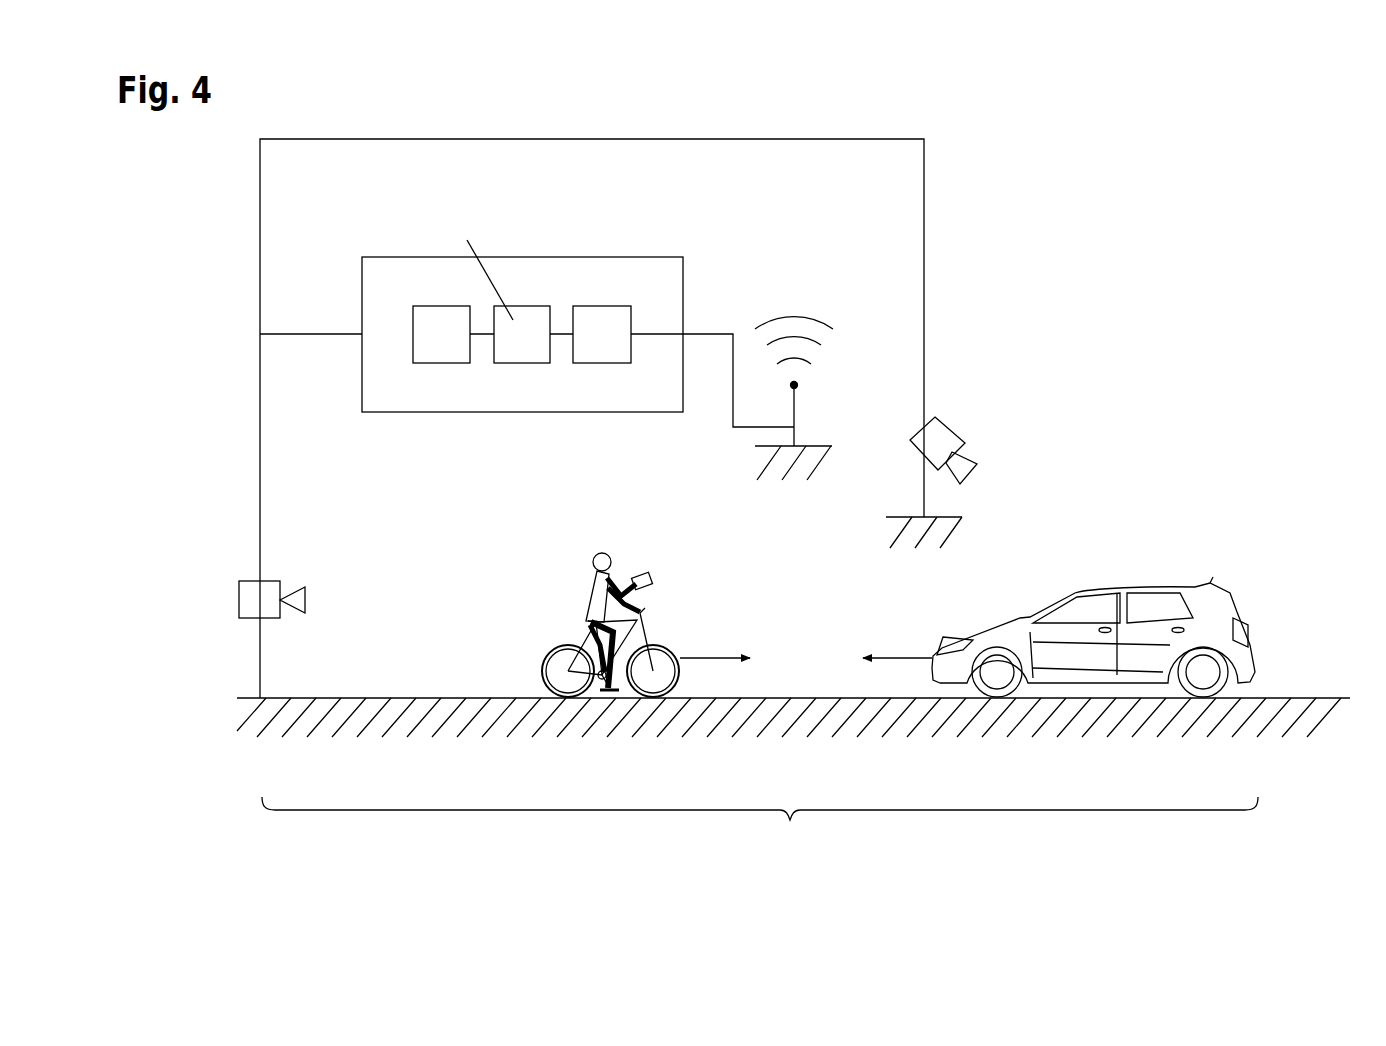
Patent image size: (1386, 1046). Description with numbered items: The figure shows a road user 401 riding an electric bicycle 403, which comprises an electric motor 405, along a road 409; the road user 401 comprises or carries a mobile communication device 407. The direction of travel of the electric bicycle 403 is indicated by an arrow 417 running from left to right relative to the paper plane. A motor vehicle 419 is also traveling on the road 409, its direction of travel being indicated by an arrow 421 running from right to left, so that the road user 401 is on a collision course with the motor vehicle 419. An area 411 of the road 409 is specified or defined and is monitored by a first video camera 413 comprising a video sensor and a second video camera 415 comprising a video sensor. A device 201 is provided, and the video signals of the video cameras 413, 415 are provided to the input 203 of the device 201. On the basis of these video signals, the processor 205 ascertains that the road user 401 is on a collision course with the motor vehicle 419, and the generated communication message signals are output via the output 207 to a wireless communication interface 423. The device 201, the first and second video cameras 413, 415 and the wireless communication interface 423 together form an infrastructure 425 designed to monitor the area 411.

The device 201 is at (522, 257).
The input 203 is at (442, 363).
The processor 205 is at (523, 363).
The output 207 is at (600, 363).
The road user 401 is at (599, 614).
The electric bicycle 403 is at (634, 697).
The electric motor 405 is at (623, 682).
The mobile communication device 407 is at (655, 576).
The road 409 is at (1333, 697).
The area 411 is at (760, 827).
The first video camera 413 is at (239, 600).
The second video camera 415 is at (952, 427).
The direction of travel of electric bicycle 417 is at (707, 656).
The motor vehicle 419 is at (1217, 588).
The direction of travel of motor vehicle 421 is at (908, 656).
The wireless communication interface 423 is at (794, 407).
The infrastructure 425 is at (977, 372).